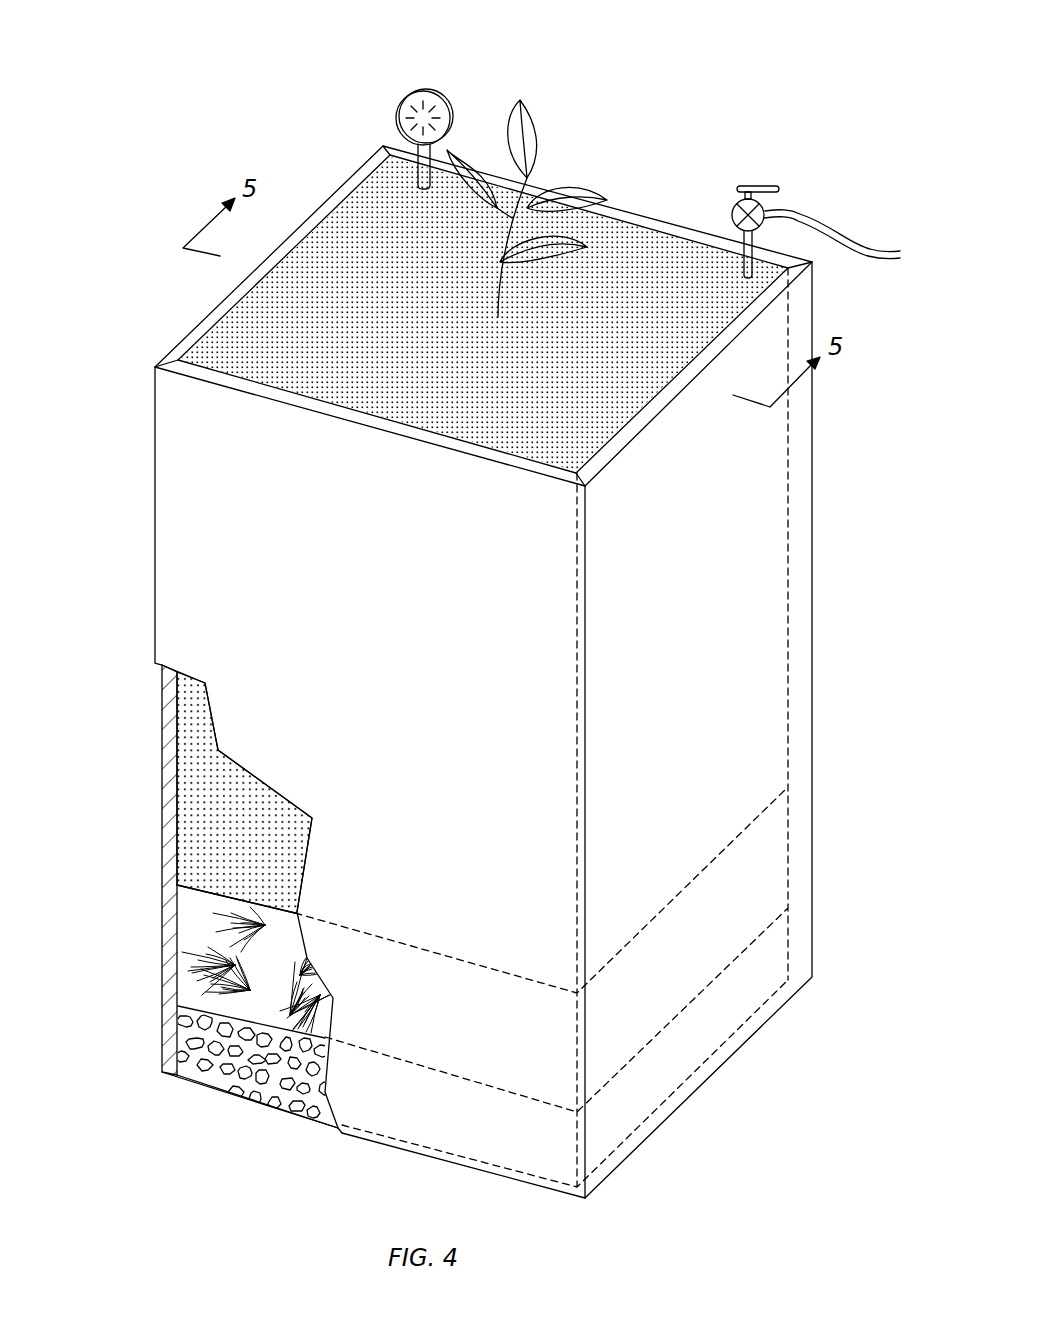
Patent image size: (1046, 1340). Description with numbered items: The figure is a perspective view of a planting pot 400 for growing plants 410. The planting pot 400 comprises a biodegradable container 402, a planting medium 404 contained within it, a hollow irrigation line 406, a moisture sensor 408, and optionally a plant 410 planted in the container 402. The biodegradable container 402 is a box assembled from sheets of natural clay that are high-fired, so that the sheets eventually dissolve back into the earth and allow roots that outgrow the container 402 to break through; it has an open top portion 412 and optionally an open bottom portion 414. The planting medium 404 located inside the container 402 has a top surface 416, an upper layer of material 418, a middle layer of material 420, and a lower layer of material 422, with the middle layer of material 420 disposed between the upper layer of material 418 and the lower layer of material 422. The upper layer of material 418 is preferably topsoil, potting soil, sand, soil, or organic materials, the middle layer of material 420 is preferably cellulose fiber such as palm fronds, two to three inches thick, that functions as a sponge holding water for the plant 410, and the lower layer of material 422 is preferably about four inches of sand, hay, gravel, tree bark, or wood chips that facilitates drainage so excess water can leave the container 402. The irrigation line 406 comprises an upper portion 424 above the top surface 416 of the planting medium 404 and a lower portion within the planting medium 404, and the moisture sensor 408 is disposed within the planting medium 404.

The planting pot 400 is at (460, 604).
The biodegradable container 402 is at (752, 548).
The planting medium 404 is at (147, 855).
The hollow irrigation line 406 is at (797, 206).
The moisture sensor 408 is at (425, 90).
The plant 410 is at (547, 133).
The open top portion 412 is at (241, 360).
The open bottom portion 414 is at (226, 1108).
The top surface 416 is at (367, 226).
The upper layer of material 418 is at (225, 808).
The middle layer of material 420 is at (212, 955).
The lower layer of material 422 is at (207, 1040).
The upper portion of the irrigation line 424 is at (740, 268).